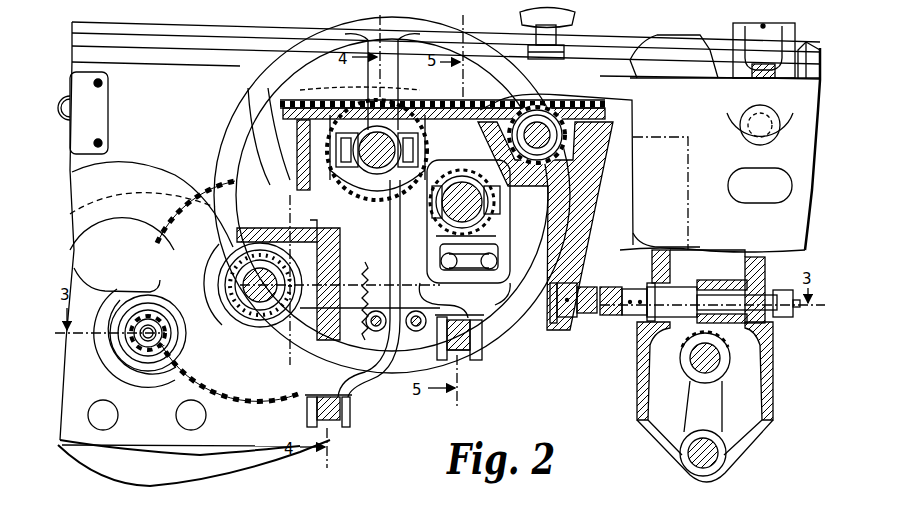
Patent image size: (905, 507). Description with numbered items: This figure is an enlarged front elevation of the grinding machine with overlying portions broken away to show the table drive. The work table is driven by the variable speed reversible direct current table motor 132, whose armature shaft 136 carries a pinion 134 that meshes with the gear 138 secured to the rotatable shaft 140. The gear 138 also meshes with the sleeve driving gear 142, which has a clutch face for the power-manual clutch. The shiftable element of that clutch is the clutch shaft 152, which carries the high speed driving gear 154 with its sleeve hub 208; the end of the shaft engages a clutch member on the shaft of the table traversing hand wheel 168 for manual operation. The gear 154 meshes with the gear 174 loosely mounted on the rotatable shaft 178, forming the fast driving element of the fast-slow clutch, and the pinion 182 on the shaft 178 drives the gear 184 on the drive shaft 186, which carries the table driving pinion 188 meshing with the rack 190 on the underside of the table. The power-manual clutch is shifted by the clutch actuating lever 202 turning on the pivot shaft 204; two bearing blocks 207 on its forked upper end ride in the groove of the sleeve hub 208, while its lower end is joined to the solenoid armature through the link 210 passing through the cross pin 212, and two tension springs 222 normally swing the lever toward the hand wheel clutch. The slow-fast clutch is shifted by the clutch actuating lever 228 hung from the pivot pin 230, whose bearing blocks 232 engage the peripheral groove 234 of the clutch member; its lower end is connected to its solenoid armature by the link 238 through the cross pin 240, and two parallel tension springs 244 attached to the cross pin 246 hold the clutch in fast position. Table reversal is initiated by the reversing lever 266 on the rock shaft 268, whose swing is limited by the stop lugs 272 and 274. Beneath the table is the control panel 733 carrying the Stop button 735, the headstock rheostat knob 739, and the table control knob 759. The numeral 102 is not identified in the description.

The bracket 102 is at (638, 373).
The table motor 132 is at (200, 467).
The pinion 134 is at (150, 357).
The armature shaft 136 is at (138, 345).
The gear 138 is at (215, 377).
The rotatable shaft 140 is at (262, 312).
The sleeve driving gear 142 is at (357, 86).
The clutch shaft 152 is at (397, 95).
The high speed driving gear 154 is at (395, 136).
The table traversing hand wheel 168 is at (242, 81).
The gear 174 is at (500, 243).
The rotatable shaft 178 is at (492, 214).
The pinion 182 is at (370, 260).
The gear 184 is at (583, 200).
The drive shaft 186 is at (540, 115).
The table driving pinion 188 is at (612, 160).
The rack 190 is at (630, 105).
The clutch actuating lever 202 is at (363, 384).
The pivot shaft 204 is at (288, 273).
The bearing blocks 207 is at (353, 143).
The sleeve hub 208 is at (279, 139).
The link 210 is at (330, 425).
The cross pin 212 is at (345, 412).
The tension springs 222 is at (382, 332).
The clutch actuating lever 228 is at (478, 360).
The pivot pin 230 is at (472, 101).
The bearing blocks 232 is at (492, 221).
The peripheral groove 234 is at (497, 240).
The link 238 is at (465, 360).
The cross pin 240 is at (472, 335).
The tension springs 244 is at (469, 251).
The cross pin 246 is at (472, 298).
The reversing lever 266 is at (743, 66).
The rock shaft 268 is at (750, 133).
The stop lug 272 is at (713, 50).
The stop lug 274 is at (807, 66).
The control panel 733 is at (151, 189).
The Stop button 735 is at (80, 108).
The knob 739 is at (122, 255).
The table control knob 759 is at (573, 20).